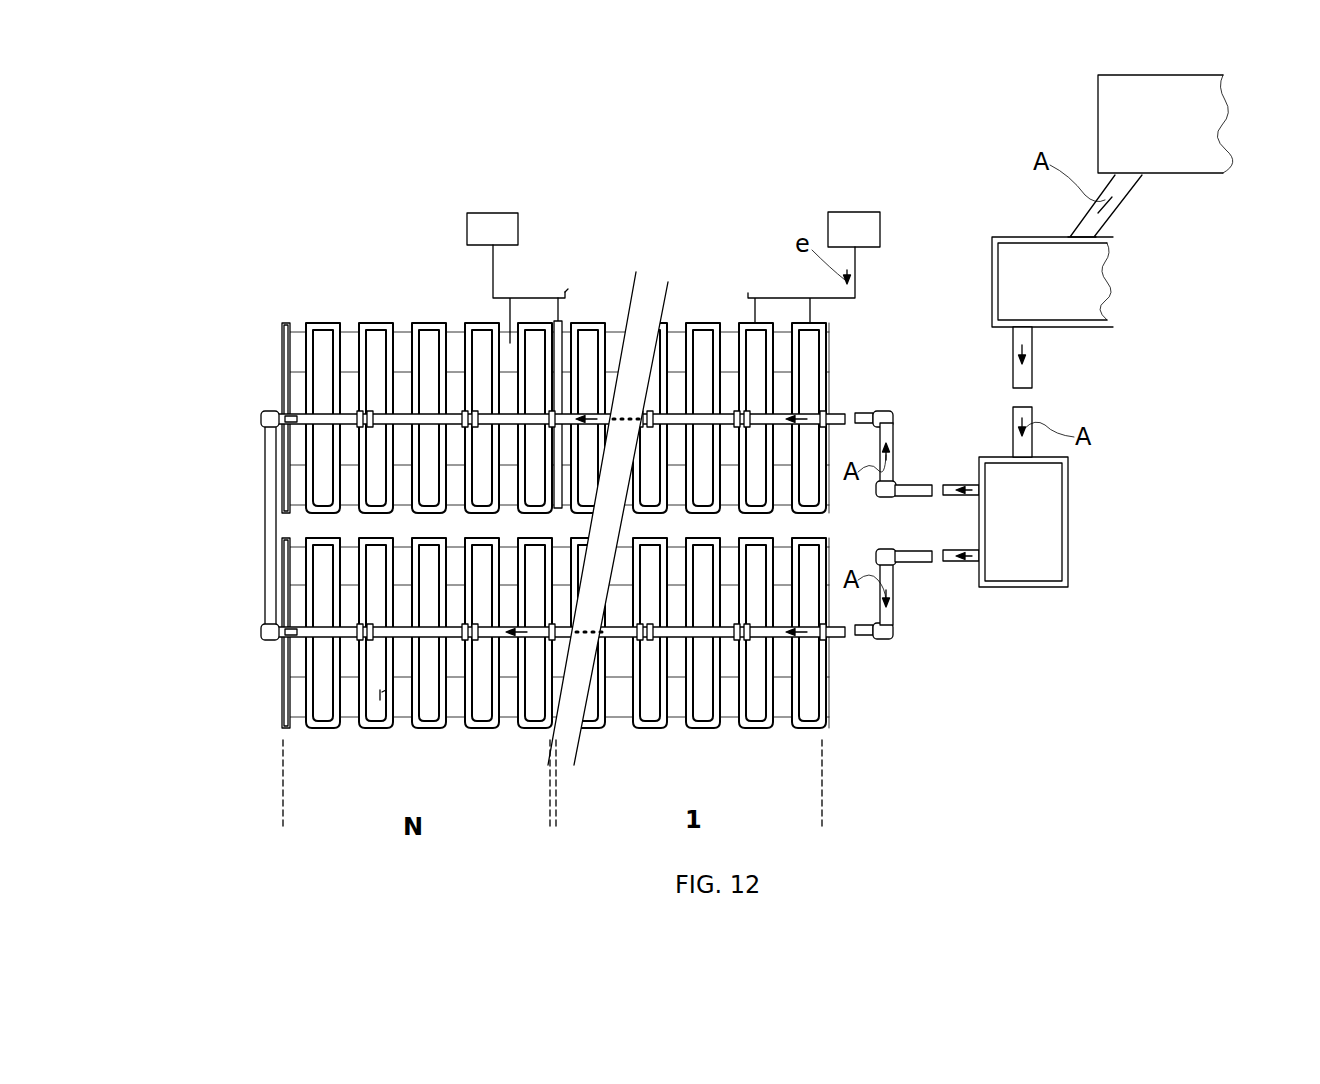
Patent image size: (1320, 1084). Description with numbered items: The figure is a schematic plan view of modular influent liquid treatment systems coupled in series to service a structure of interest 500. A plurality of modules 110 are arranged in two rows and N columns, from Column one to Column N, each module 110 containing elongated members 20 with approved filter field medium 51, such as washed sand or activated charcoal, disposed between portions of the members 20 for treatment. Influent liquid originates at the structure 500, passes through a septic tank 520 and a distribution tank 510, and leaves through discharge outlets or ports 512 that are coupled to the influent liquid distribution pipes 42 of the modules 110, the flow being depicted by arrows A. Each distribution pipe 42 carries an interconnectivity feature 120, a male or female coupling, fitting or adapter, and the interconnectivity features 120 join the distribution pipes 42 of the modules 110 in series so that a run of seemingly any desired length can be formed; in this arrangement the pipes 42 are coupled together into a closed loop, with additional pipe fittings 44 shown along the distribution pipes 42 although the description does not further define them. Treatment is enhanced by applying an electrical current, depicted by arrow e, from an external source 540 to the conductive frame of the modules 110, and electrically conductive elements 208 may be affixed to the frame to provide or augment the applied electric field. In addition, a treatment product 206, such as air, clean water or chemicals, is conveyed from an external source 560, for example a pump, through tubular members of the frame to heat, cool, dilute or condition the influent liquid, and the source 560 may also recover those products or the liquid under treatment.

The elongated member 20 is at (426, 320).
The influent liquid distribution pipe 42 is at (258, 522).
The pipe coupling 44 is at (356, 410).
The approved filter field medium 51 is at (576, 348).
The module 110 is at (386, 290).
The interconnectivity feature 120 is at (262, 406).
The treatment product (gas or liquid) 206 is at (499, 262).
The electrically conductive element 208 is at (284, 725).
The structure of interest 500 is at (1190, 175).
The distribution tank 510 is at (1068, 492).
The discharge outlet or port 512 is at (975, 484).
The septic tank 520 is at (1093, 327).
The external source (of electrical current) 540 is at (860, 211).
The external source (e.g., pump) 560 is at (500, 210).